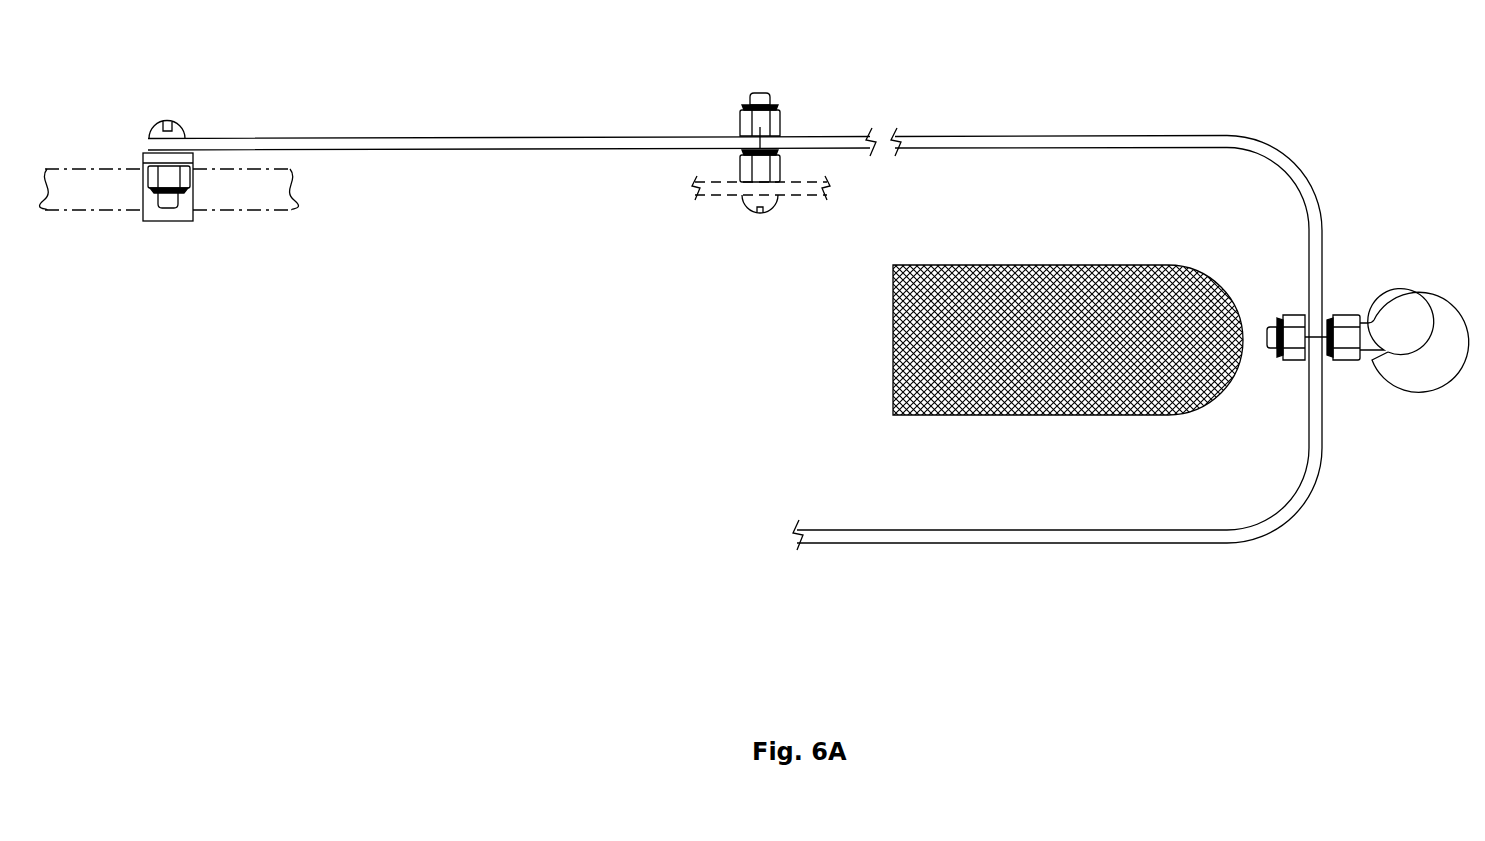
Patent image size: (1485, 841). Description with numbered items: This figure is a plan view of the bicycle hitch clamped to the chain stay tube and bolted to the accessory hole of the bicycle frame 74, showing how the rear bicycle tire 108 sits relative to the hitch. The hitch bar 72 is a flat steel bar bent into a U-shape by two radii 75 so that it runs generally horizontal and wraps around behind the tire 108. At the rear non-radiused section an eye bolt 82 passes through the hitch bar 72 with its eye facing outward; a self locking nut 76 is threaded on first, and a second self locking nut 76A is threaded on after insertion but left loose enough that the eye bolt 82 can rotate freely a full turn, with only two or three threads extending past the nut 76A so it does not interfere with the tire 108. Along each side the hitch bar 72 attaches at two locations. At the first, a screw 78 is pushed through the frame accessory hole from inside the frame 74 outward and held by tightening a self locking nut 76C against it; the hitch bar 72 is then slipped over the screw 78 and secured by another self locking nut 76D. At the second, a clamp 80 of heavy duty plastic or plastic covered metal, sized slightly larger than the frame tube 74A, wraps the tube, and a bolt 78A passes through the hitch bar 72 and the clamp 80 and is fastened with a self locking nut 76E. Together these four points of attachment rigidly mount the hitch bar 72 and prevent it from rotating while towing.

The hitch bar 72 is at (462, 143).
The bicycle frame 74 is at (720, 192).
The bike frame tube 74A is at (253, 198).
The radius 75 is at (1260, 170).
The self locking nut 76 is at (1345, 343).
The self locking nut 76A is at (1297, 342).
The self locking nut 76C is at (778, 173).
The self locking nut 76D is at (778, 125).
The self locking nut 76E is at (152, 175).
The screw 78 is at (762, 98).
The bolt 78A is at (172, 203).
The clamp 80 is at (153, 215).
The eye bolt 82 is at (1422, 297).
The bicycle tire 108 is at (995, 400).